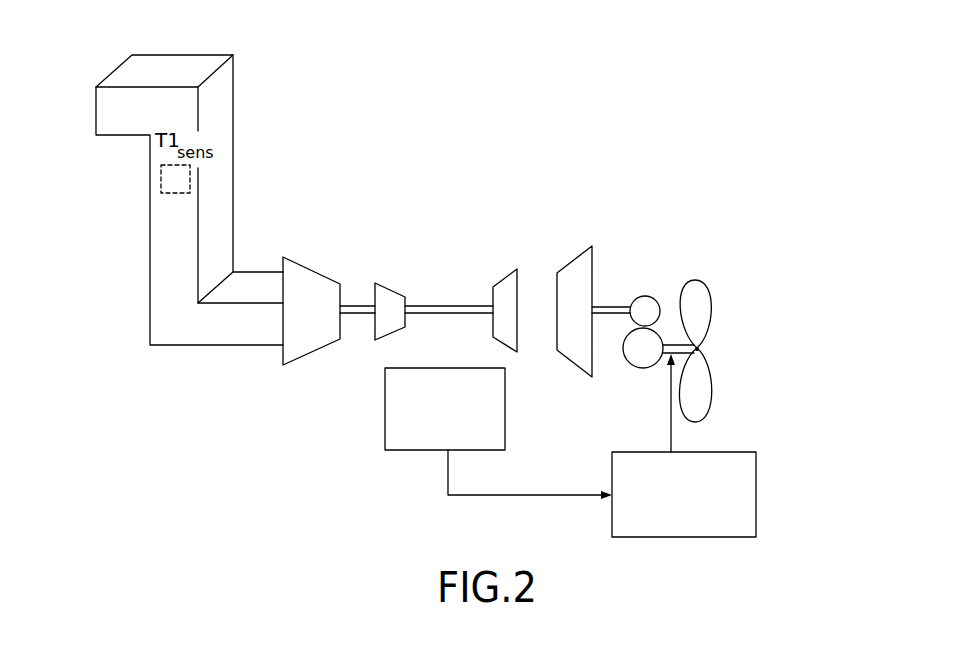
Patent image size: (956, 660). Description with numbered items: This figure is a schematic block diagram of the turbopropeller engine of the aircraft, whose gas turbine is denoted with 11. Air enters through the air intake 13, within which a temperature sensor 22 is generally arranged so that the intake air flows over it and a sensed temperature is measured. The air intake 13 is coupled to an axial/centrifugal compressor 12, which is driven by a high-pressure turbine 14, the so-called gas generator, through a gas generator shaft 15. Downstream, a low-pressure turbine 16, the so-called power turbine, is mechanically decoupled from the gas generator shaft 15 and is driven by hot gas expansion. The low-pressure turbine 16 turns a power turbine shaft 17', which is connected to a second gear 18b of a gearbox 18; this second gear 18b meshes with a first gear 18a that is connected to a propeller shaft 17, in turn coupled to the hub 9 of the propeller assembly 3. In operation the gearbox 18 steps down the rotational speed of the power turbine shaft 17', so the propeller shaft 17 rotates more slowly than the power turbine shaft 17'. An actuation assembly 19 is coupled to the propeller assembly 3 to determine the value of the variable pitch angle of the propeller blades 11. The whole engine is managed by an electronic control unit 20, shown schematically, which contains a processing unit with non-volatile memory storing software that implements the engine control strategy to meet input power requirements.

The propeller assembly 3 is at (708, 258).
The hub 9 is at (702, 350).
The gas turbine / propeller blades 11 is at (443, 186).
The axial/centrifugal compressor 12 is at (351, 266).
The air intake 13 is at (263, 252).
The high-pressure turbine 14 is at (506, 285).
The gas generator shaft 15 is at (442, 308).
The low-pressure turbine 16 is at (573, 263).
The propeller shaft 17 is at (678, 308).
The power turbine shaft 17' is at (617, 267).
The gearbox 18 is at (631, 329).
The first gear 18a is at (643, 369).
The second gear 18b is at (654, 296).
The actuation assembly 19 is at (753, 483).
The electronic control unit 20 is at (504, 423).
The temperature sensor 22 is at (161, 185).